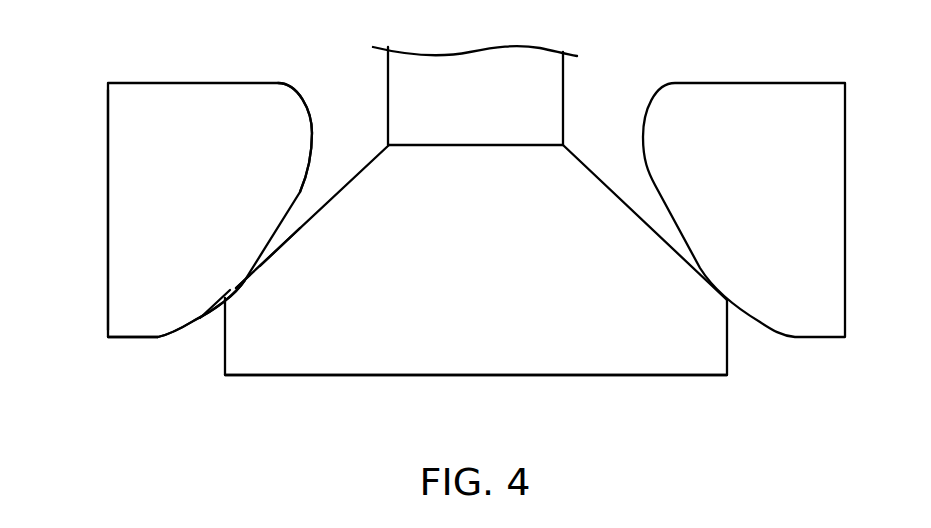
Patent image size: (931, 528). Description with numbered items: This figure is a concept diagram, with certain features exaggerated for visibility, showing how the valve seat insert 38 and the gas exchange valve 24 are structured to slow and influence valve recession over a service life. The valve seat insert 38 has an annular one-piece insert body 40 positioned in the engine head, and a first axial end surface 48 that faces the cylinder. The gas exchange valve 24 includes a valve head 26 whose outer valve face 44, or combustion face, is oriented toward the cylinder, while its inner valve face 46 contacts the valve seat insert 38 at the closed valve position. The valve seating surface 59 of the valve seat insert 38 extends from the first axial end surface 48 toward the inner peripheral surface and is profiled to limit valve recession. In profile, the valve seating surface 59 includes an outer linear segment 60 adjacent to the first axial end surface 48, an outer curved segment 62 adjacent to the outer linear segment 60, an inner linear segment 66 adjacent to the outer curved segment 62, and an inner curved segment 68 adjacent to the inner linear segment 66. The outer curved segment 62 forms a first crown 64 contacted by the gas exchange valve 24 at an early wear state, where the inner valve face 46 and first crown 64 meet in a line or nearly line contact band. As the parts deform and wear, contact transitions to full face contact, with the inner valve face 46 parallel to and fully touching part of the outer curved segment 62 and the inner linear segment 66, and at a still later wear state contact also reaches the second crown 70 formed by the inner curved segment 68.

The gas exchange valve 24 is at (576, 82).
The valve head 26 is at (483, 343).
The valve seat insert 38 is at (70, 136).
The insert body 40 is at (108, 202).
The outer valve face 44 is at (605, 375).
The inner valve face 46 is at (610, 185).
The first axial end surface 48 is at (108, 338).
The valve seating surface 59 is at (279, 259).
The outer linear segment 60 is at (176, 332).
The outer curved segment 62 is at (215, 307).
The first crown 64 is at (248, 292).
The inner linear segment 66 is at (297, 192).
The inner curved segment 68 is at (312, 154).
The second crown 70 is at (324, 131).